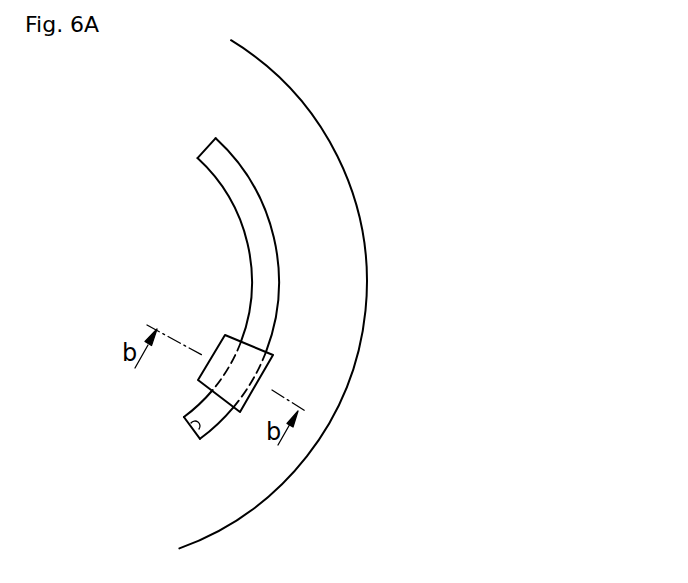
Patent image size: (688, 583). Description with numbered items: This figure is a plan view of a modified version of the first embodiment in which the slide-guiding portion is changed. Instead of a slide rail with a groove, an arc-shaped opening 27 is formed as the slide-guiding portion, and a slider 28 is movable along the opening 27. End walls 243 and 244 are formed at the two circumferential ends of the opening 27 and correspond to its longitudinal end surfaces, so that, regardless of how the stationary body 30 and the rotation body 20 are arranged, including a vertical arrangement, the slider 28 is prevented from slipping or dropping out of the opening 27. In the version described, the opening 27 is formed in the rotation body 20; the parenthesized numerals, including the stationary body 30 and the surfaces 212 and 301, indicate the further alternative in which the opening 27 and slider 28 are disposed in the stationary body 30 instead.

The rotation body 20 is at (348, 294).
The stationary body 30 is at (348, 294).
The outer peripheral surface 212 is at (348, 294).
The outer peripheral surface of core 301 is at (318, 159).
The arc-shaped opening 27 is at (198, 307).
The end wall 244 is at (205, 160).
The end wall 243 is at (197, 435).
The slider 28 is at (269, 368).